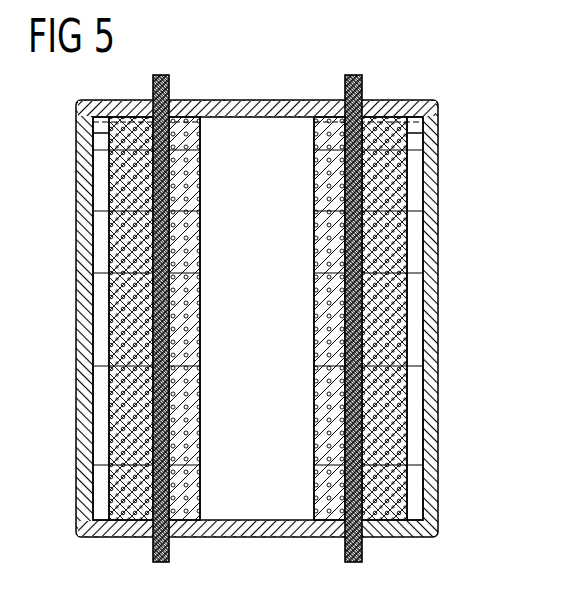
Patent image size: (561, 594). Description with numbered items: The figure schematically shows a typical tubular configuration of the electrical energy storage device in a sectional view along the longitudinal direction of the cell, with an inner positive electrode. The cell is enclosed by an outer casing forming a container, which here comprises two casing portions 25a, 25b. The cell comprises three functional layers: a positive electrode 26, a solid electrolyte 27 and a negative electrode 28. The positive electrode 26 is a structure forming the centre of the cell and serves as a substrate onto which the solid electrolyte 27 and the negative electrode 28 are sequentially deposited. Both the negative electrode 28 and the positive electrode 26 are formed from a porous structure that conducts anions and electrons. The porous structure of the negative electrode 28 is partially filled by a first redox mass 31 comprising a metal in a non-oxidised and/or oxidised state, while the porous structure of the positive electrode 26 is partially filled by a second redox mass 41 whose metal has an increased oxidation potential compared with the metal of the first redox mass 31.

The casing portion 25a is at (430, 265).
The casing portion 25b is at (240, 108).
The positive electrode 26 is at (315, 230).
The solid electrolyte 27 is at (340, 321).
The negative electrode 28 is at (110, 428).
The first redox mass 31 is at (106, 198).
The second redox mass 41 is at (265, 145).